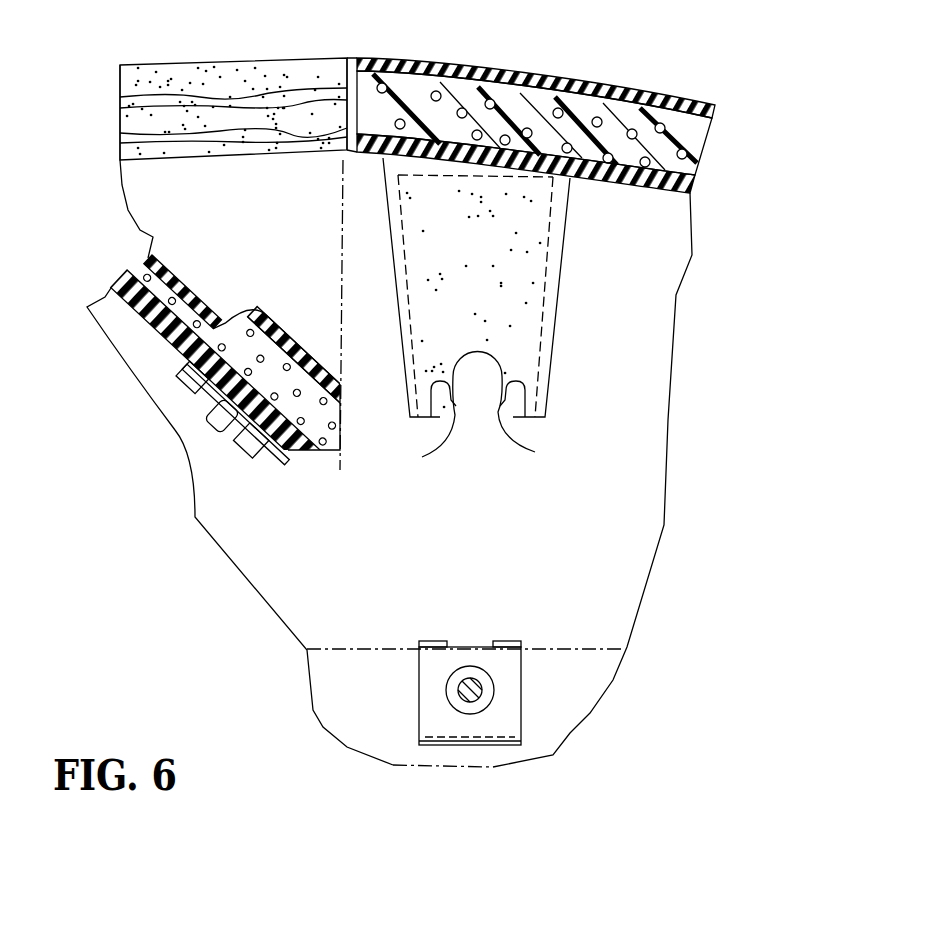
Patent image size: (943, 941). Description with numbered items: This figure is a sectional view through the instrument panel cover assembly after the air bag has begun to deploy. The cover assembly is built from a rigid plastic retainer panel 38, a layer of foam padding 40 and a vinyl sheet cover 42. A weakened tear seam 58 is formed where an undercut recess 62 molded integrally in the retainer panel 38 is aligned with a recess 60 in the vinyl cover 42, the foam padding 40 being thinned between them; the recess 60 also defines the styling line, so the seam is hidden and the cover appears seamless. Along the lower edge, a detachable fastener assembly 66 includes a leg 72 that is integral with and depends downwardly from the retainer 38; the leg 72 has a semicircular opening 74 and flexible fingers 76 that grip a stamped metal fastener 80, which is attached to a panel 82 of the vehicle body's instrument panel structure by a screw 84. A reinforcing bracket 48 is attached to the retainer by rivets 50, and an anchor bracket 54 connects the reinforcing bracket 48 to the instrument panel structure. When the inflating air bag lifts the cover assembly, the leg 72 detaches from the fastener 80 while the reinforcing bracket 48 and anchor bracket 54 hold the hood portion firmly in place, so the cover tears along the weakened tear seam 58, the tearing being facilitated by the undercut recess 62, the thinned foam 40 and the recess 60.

The retainer panel 38 is at (633, 187).
The layer of foam padding 40 is at (688, 145).
The vinyl sheet cover 42 is at (543, 68).
The reinforcing bracket 48 is at (207, 403).
The rivets 50 is at (207, 430).
The anchor bracket 54 is at (197, 390).
The weakened tear seam 58 is at (372, 70).
The recess 60 is at (347, 58).
The undercut recess 62 is at (347, 150).
The detachable fastener assembly 66 is at (524, 294).
The leg 72 is at (453, 268).
The semicircular opening 74 is at (455, 353).
The flexible fingers 76 is at (422, 457).
The stamped metal fastener 80 is at (507, 665).
The panel 82 is at (573, 675).
The screw 84 is at (472, 700).